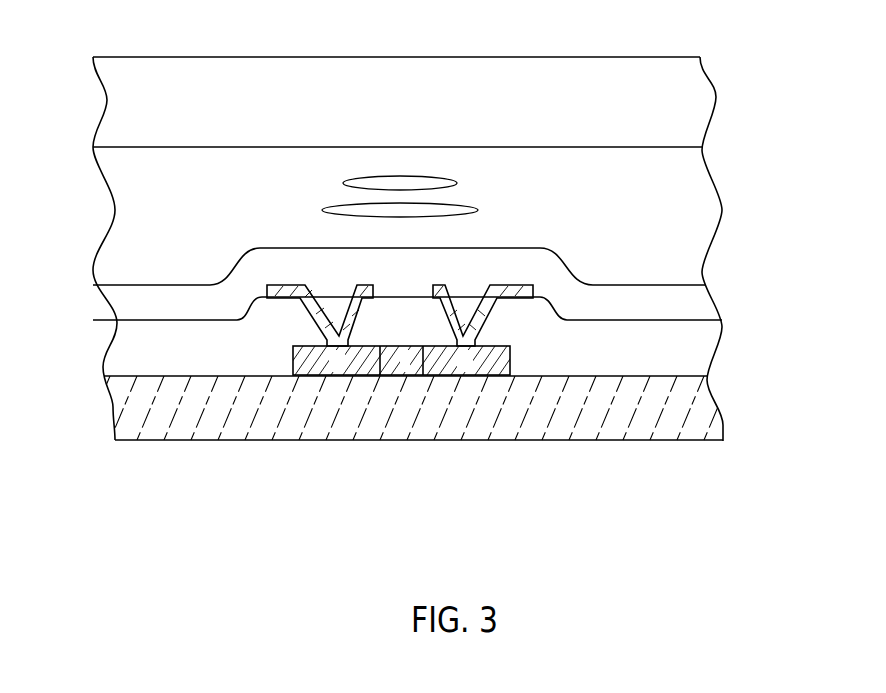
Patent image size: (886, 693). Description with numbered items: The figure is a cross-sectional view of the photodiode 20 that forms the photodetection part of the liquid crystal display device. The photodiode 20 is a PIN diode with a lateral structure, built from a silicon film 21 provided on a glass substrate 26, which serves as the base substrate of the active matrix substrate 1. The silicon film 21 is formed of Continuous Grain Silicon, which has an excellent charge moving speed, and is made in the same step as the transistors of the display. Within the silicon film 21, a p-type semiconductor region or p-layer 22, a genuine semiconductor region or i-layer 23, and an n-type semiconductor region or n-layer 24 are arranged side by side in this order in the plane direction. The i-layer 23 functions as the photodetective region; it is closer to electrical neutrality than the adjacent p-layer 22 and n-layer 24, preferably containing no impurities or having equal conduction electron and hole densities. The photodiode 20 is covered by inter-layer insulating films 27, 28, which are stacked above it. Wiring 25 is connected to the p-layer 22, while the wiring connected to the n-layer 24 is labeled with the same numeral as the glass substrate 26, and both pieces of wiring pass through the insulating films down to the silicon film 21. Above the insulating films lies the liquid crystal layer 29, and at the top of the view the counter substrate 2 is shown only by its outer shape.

The active matrix substrate 1 is at (752, 302).
The counter substrate 2 is at (397, 57).
The photodiode 20 is at (401, 449).
The silicon film 21 is at (411, 449).
The p-type semiconductor region (p-layer) 22 is at (360, 376).
The genuine semiconductor region (i-layer) 23 is at (405, 376).
The n-type semiconductor region (n-layer) 24 is at (473, 376).
The wiring 25 is at (263, 292).
The glass substrate 26 is at (698, 409).
The inter-layer insulating film 27 is at (683, 352).
The inter-layer insulating film 28 is at (683, 305).
The liquid crystal layer 29 is at (681, 184).